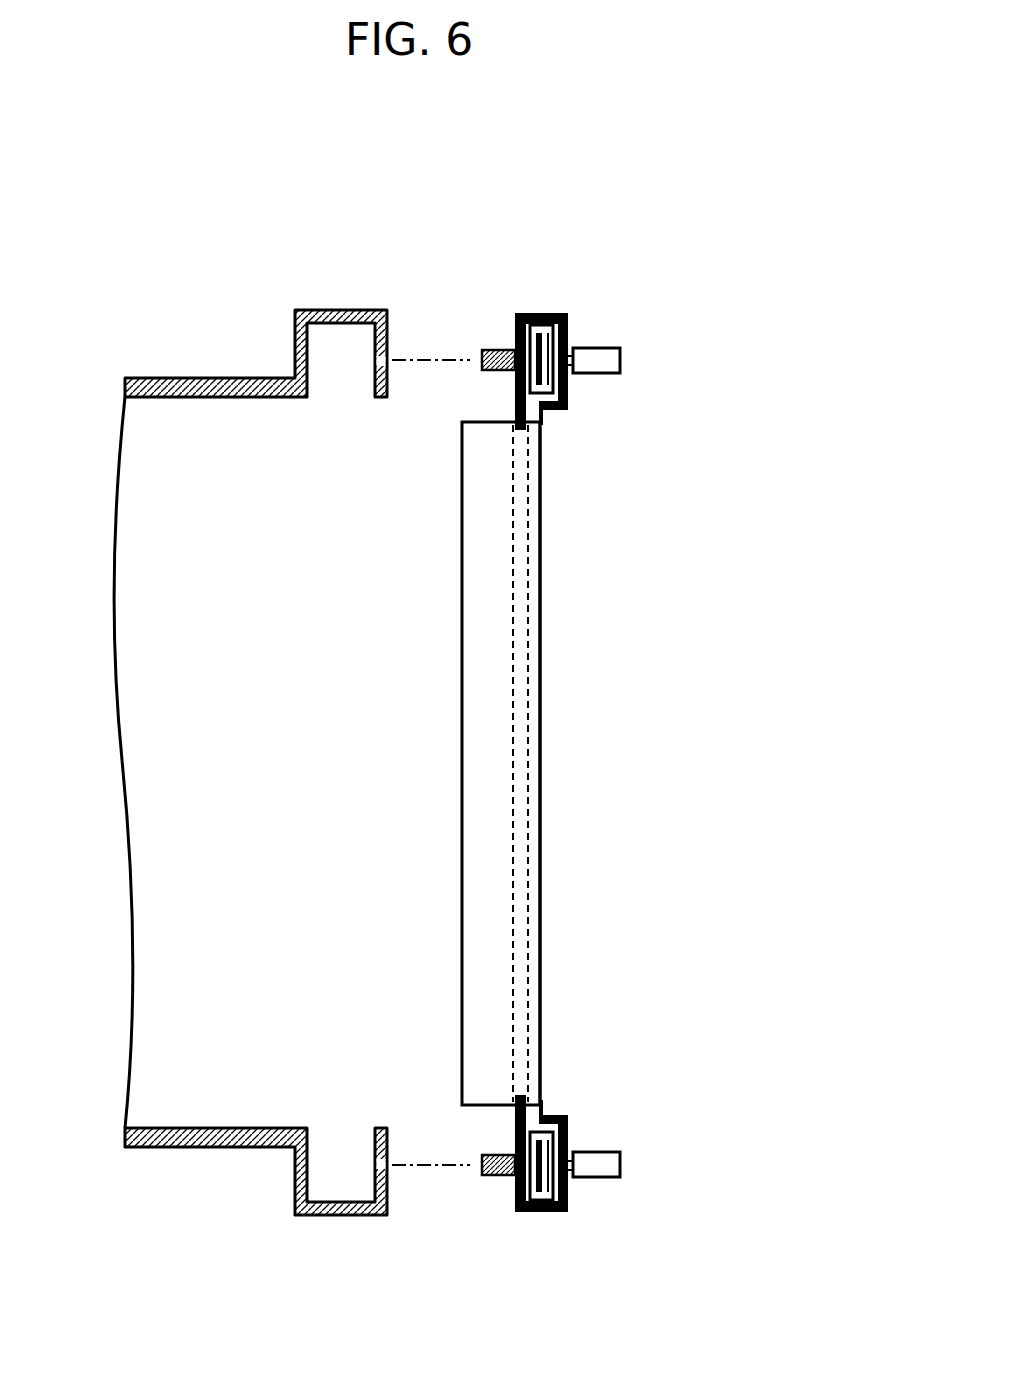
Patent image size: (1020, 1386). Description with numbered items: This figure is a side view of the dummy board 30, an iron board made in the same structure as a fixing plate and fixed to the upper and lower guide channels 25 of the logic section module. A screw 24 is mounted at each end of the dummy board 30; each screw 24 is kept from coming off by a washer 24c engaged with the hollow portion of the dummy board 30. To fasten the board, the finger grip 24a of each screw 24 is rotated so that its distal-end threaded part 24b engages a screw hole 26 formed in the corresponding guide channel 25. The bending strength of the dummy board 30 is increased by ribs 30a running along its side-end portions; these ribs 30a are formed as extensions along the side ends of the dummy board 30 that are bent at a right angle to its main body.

The screw 24 is at (620, 360).
The finger grip 24a is at (592, 362).
The distal-end threaded part 24b is at (493, 349).
The washer 24c is at (539, 325).
The guide channel 25 is at (397, 314).
The screw hole 26 is at (372, 362).
The dummy board 30 is at (542, 741).
The rib 30a is at (482, 767).